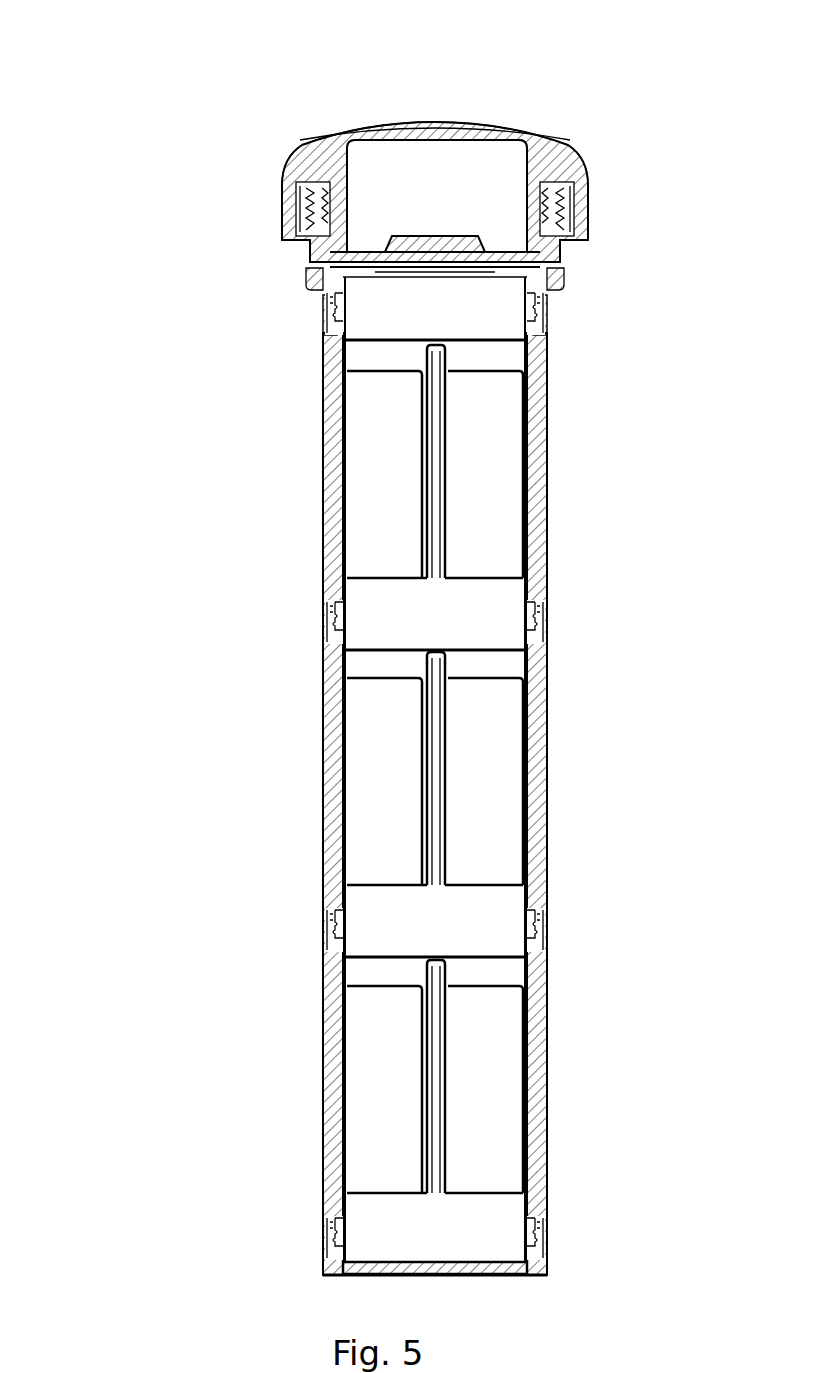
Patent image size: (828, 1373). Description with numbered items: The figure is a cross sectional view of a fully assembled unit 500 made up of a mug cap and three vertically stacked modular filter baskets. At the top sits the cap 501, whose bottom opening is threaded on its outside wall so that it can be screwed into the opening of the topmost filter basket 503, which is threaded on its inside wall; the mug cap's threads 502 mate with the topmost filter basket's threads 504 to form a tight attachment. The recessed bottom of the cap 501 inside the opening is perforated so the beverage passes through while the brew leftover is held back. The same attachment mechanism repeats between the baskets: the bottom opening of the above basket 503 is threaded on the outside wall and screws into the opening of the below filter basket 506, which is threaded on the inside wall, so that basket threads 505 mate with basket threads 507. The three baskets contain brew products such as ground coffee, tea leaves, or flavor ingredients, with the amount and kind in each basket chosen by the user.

The fully assembled unit 500 is at (192, 137).
The cap 501 is at (467, 115).
The mug cap's threads 502 is at (547, 318).
The topmost filter basket 503 is at (335, 458).
The topmost filter basket's threads 504 is at (325, 322).
The basket 503's threads 505 is at (332, 623).
The below filter basket 506 is at (333, 775).
The basket 506's threads 507 is at (545, 623).